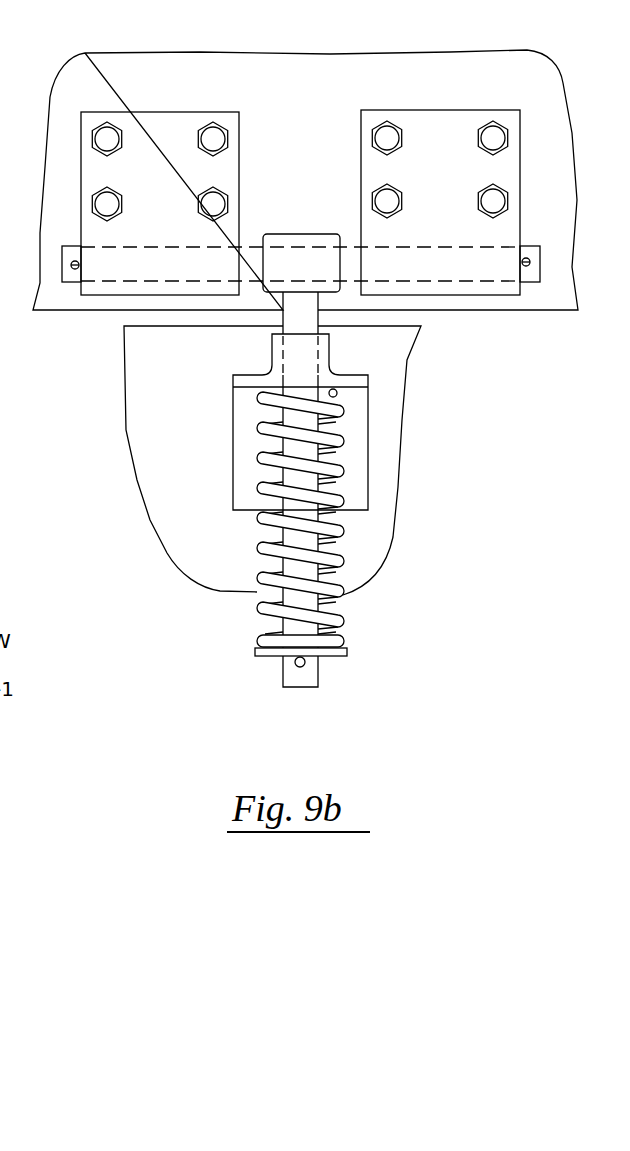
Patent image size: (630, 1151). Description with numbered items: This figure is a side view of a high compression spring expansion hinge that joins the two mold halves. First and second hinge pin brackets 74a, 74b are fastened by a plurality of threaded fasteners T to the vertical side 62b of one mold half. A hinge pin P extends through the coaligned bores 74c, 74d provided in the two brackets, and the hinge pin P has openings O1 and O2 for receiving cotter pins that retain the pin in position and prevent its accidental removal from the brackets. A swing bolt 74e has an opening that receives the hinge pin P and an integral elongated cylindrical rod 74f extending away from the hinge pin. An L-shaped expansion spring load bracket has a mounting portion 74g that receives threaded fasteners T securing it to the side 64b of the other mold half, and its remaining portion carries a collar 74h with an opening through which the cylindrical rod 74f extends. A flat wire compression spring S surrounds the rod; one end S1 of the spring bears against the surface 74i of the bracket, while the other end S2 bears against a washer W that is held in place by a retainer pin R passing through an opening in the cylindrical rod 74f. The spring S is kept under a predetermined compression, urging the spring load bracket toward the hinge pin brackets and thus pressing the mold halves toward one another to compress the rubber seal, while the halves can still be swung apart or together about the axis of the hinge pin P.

The vertical side 62b is at (163, 85).
The first hinge pin bracket 74a is at (141, 127).
The second hinge pin bracket 74b is at (438, 130).
The threaded fasteners T is at (207, 208).
The bore 74c is at (230, 247).
The bore 74d is at (442, 279).
The hinge pin P is at (72, 262).
The opening O1 is at (62, 284).
The opening O2 is at (527, 266).
The swing bolt 74e is at (308, 234).
The vertical side 64b is at (183, 480).
The collar 74h is at (270, 345).
The surface 74i is at (233, 383).
The mounting portion 74g is at (233, 435).
The cylindrical rod 74f is at (287, 683).
The flat wire compression spring S is at (340, 540).
The spring end S1 is at (340, 393).
The spring end S2 is at (340, 640).
The washer W is at (257, 652).
The retainer pin R is at (303, 667).